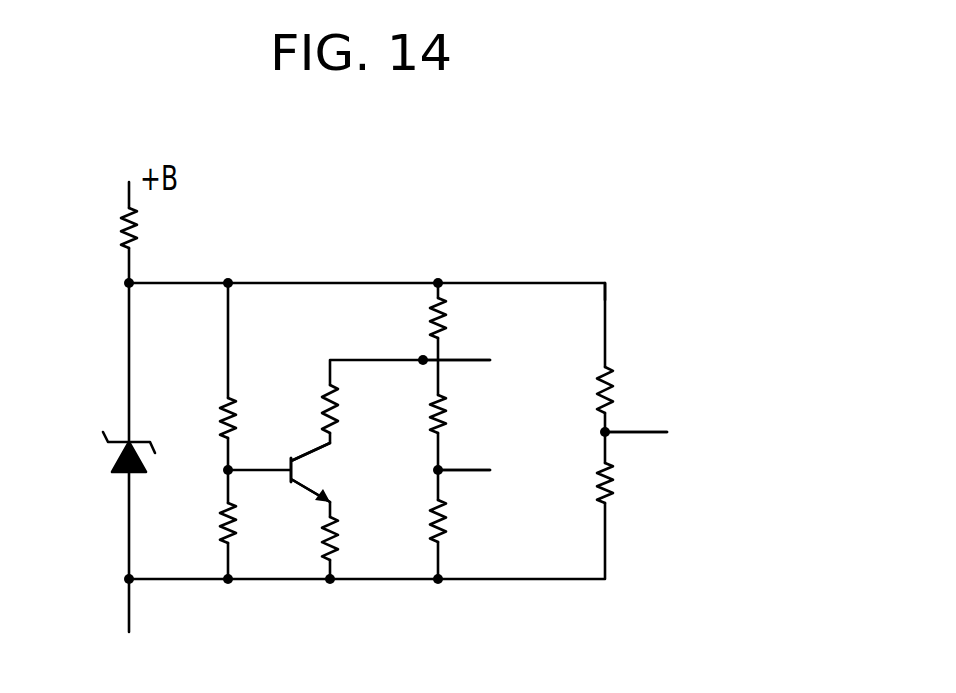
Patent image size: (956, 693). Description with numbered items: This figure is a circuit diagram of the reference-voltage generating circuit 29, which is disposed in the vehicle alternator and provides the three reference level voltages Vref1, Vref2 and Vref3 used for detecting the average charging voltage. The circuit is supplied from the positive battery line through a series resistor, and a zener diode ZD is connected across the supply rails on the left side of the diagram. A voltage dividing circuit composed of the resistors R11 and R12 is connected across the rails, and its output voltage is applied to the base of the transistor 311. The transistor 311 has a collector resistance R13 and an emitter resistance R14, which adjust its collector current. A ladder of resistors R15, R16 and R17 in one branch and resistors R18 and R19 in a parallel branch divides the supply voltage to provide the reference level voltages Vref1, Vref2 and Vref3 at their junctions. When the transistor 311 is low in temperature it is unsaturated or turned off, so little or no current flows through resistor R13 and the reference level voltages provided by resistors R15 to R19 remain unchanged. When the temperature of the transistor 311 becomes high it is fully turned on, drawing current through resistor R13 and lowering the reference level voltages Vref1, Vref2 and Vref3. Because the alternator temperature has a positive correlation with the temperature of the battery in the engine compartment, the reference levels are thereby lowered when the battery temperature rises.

The reference-voltage generating circuit 29 is at (622, 276).
The transistor 311 is at (309, 487).
The zener diode ZD is at (112, 452).
The resistor R11 is at (196, 418).
The resistor R12 is at (196, 524).
The resistor R13 is at (301, 409).
The resistor R14 is at (299, 539).
The resistor R15 is at (408, 319).
The resistor R16 is at (408, 415).
The resistor R17 is at (408, 521).
The resistor R18 is at (636, 389).
The resistor R19 is at (636, 484).
The reference level voltage Vref1 is at (500, 360).
The reference level voltage Vref2 is at (680, 436).
The reference level voltage Vref3 is at (507, 470).